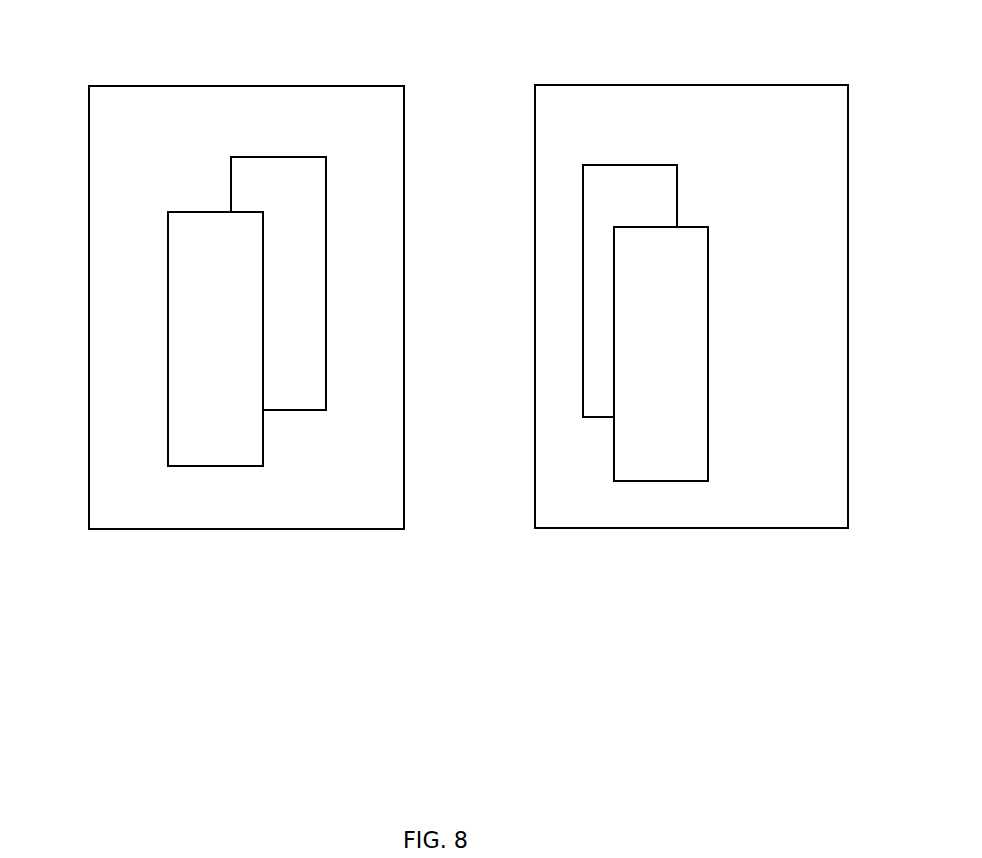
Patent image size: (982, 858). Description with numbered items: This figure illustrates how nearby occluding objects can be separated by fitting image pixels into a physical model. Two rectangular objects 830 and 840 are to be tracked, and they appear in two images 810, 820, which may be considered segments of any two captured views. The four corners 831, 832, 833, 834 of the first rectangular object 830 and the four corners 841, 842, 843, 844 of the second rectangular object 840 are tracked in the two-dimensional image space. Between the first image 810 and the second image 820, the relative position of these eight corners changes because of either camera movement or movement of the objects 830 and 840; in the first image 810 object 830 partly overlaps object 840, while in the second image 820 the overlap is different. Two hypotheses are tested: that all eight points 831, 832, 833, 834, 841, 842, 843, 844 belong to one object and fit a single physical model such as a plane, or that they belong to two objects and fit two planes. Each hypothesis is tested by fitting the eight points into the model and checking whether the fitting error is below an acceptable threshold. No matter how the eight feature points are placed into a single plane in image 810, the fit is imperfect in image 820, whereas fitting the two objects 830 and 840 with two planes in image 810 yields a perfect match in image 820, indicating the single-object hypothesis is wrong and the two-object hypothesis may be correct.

The image 810 is at (246, 307).
The image 820 is at (691, 306).
The rectangular object 830 is at (438, 346).
The rectangular object 840 is at (454, 287).
The corner 831 is at (168, 212).
The corner 832 is at (263, 212).
The corner 833 is at (168, 466).
The corner 834 is at (263, 466).
The corner 841 is at (231, 157).
The corner 842 is at (326, 157).
The corner 843 is at (583, 417).
The corner 844 is at (326, 410).